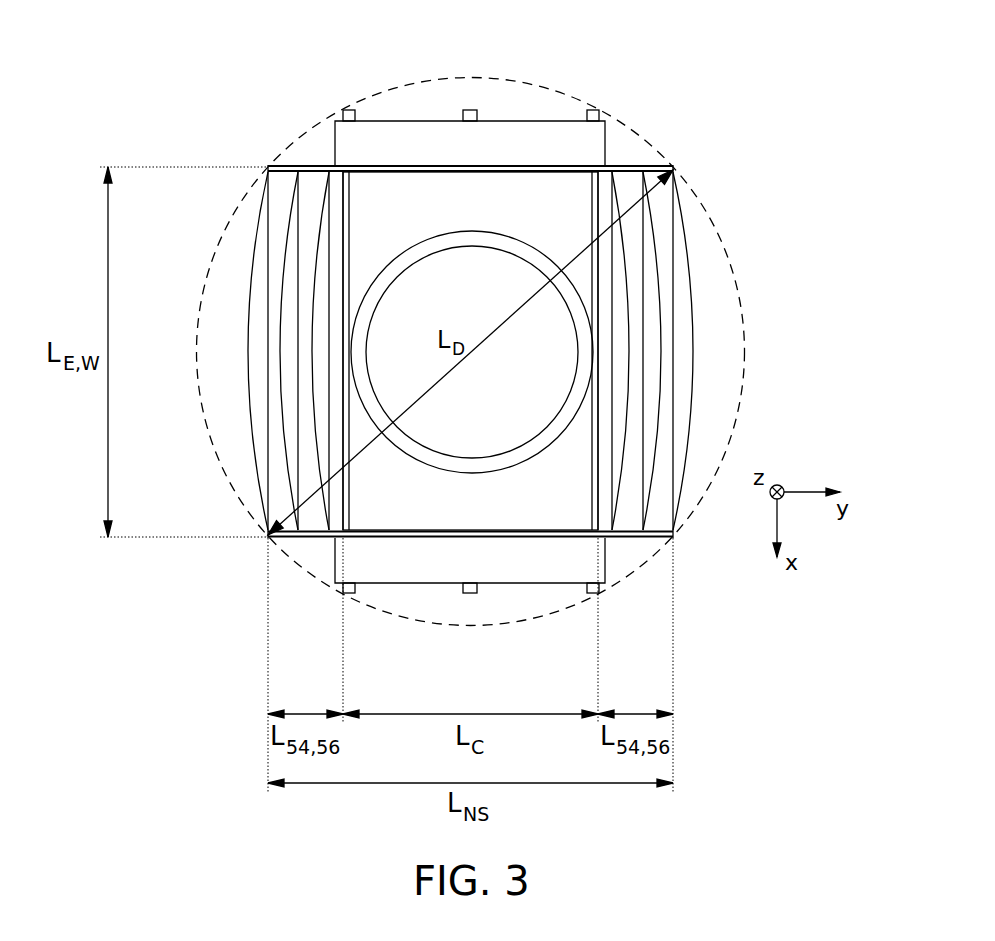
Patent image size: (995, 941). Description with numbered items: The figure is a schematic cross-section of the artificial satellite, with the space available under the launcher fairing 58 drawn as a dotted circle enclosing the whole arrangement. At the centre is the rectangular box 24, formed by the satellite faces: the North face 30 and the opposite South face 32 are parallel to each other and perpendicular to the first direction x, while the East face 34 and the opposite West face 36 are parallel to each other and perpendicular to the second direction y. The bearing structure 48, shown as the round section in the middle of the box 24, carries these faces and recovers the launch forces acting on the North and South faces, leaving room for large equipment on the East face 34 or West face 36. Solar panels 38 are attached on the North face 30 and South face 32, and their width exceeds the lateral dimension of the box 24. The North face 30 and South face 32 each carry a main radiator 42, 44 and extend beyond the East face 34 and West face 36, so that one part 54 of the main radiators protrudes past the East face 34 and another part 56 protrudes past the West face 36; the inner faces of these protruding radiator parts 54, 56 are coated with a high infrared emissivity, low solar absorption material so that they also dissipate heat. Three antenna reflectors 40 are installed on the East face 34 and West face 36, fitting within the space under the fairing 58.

The rectangular box 24 is at (496, 184).
The North face 30 is at (470, 99).
The main radiator 42 is at (383, 165).
The South face 32 is at (470, 604).
The main radiator 44 is at (557, 538).
The East face 34 is at (607, 538).
The West face 36 is at (340, 533).
The solar panels 38 is at (553, 148).
The reflectors 40 is at (320, 277).
The bearing structure 48 is at (582, 356).
The protruding radiator part 54 is at (642, 167).
The protruding radiator part 56 is at (296, 165).
The fairing 58 is at (703, 200).